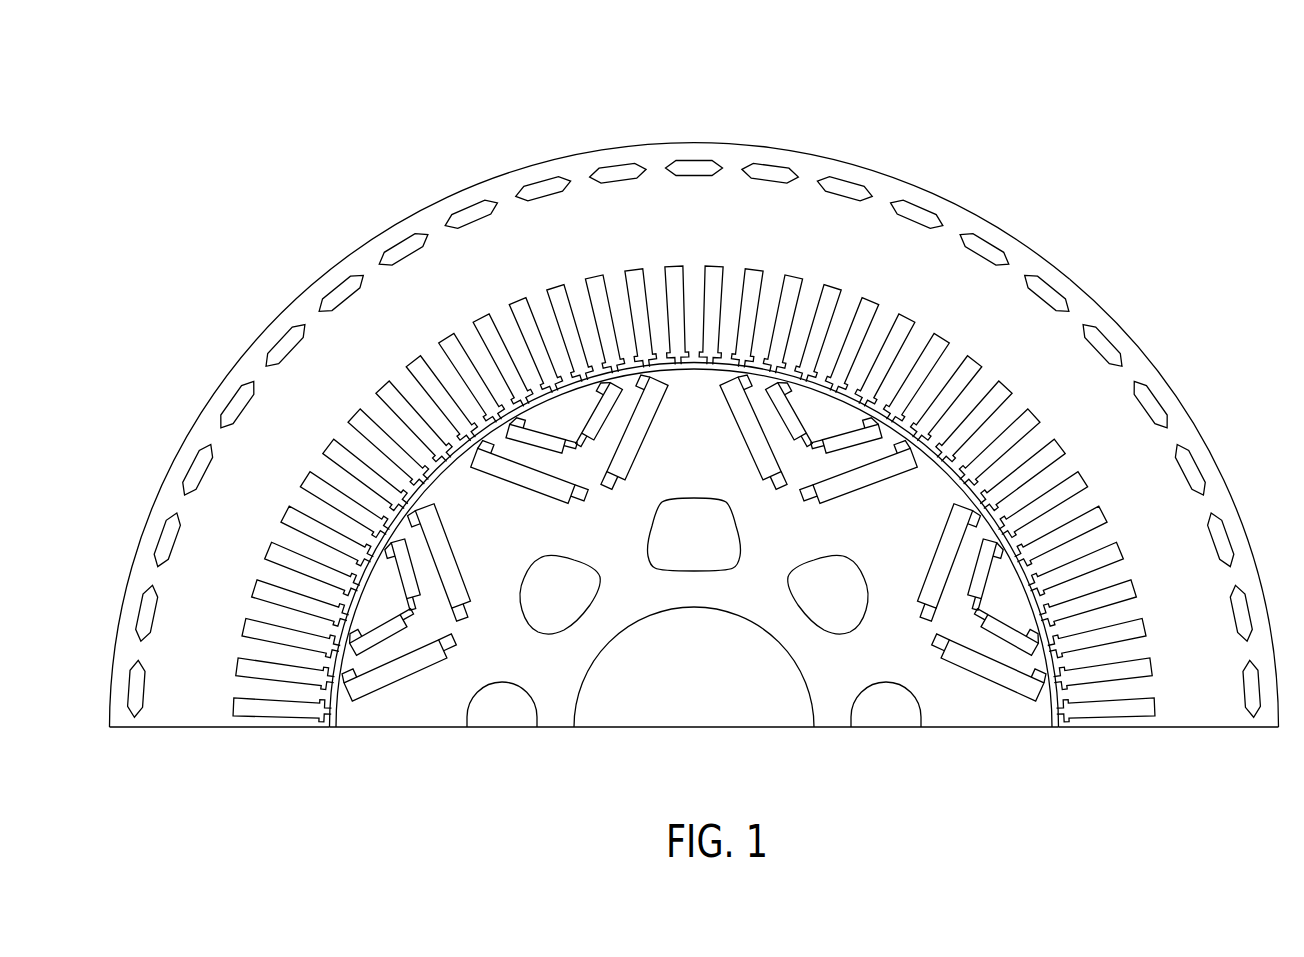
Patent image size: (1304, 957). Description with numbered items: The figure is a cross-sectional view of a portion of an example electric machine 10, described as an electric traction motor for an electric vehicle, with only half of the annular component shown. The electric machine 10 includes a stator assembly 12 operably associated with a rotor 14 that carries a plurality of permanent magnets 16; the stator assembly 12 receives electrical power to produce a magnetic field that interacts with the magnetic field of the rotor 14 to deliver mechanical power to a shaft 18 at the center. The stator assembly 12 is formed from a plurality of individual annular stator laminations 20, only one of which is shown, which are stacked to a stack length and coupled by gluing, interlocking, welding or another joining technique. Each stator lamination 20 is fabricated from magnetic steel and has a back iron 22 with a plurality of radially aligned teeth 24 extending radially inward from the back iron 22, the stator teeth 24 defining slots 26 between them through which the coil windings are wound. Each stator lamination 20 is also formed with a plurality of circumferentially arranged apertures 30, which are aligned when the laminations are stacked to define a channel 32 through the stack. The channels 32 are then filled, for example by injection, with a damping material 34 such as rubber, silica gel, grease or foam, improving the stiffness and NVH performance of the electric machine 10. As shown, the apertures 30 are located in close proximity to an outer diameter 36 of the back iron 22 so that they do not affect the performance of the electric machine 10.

The electric machine 10 is at (998, 140).
The stator assembly 12 is at (351, 172).
The rotor 14 is at (430, 715).
The permanent magnets 16 is at (728, 403).
The shaft 18 is at (700, 715).
The stator lamination 20 is at (455, 172).
The back iron 22 is at (1007, 272).
The teeth 24 is at (255, 688).
The slots 26 is at (272, 707).
The apertures 30 is at (682, 160).
The channel 32 is at (772, 170).
The damping material 34 is at (600, 172).
The outer diameter 36 is at (1112, 320).